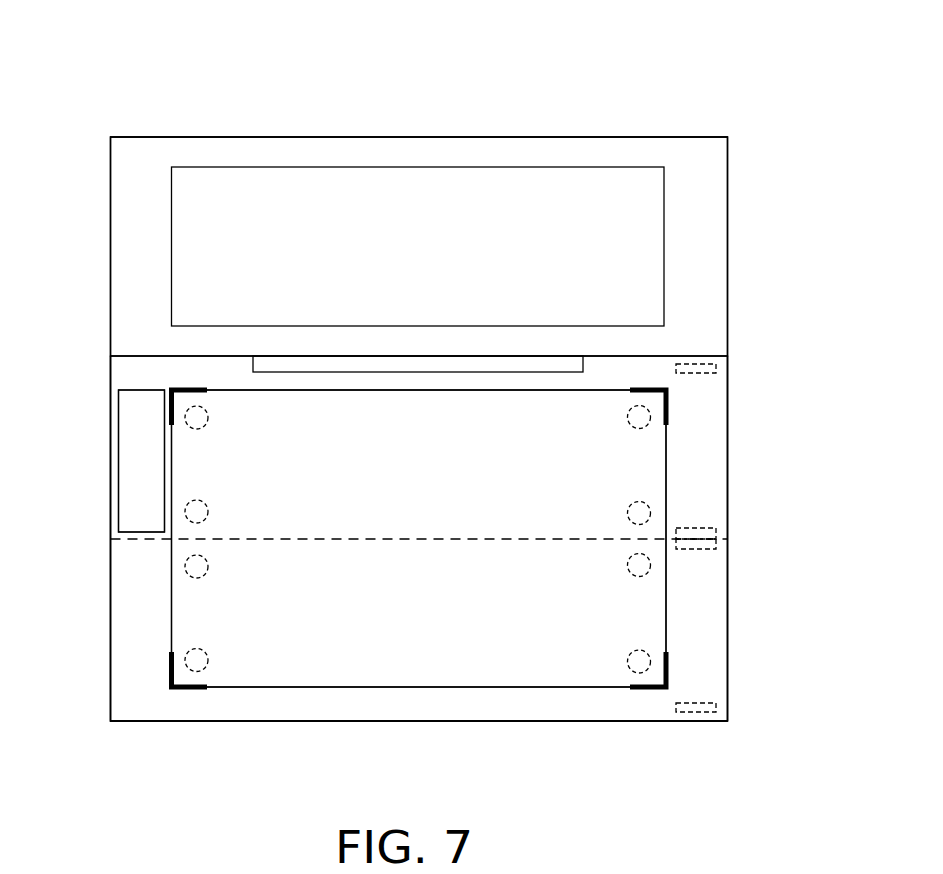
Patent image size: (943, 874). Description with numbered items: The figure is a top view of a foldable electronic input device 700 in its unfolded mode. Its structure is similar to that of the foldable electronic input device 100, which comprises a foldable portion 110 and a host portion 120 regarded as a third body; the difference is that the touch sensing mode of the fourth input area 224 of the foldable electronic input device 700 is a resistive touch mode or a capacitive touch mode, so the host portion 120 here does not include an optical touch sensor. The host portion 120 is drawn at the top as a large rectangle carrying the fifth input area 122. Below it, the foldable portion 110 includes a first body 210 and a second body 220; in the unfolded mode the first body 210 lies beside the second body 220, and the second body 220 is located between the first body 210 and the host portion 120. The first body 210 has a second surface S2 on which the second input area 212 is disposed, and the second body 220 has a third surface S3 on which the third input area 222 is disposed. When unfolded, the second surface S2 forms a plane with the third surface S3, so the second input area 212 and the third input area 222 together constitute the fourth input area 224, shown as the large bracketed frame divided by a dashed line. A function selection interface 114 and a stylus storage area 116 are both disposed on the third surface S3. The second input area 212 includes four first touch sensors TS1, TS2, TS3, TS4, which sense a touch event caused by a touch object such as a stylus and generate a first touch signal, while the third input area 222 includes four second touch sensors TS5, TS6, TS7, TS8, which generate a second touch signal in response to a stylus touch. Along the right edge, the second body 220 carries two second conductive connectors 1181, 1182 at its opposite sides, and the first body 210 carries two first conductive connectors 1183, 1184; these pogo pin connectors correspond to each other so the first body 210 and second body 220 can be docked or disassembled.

The foldable electronic input device 700 is at (703, 113).
The foldable electronic input device 100 is at (451, 429).
The host portion 120 is at (728, 250).
The foldable portion 110 is at (728, 467).
The fifth input area 122 is at (172, 257).
The stylus storage area 116 is at (253, 362).
The function selection interface 114 is at (118, 435).
The second body 220 is at (118, 487).
The first body 210 is at (132, 634).
The fourth input area 224 is at (96, 8).
The third input area 222 is at (419, 464).
The second input area 212 is at (419, 613).
The third surface S3 is at (697, 440).
The second surface S2 is at (697, 645).
The second conductive connector 1181 is at (716, 368).
The second conductive connector 1182 is at (716, 532).
The first conductive connector 1183 is at (716, 545).
The first conductive connector 1184 is at (716, 707).
The first touch sensor TS1 is at (208, 570).
The first touch sensor TS2 is at (208, 657).
The first touch sensor TS3 is at (628, 570).
The first touch sensor TS4 is at (628, 659).
The second touch sensor TS5 is at (208, 421).
The second touch sensor TS6 is at (208, 508).
The second touch sensor TS7 is at (628, 422).
The second touch sensor TS8 is at (628, 509).